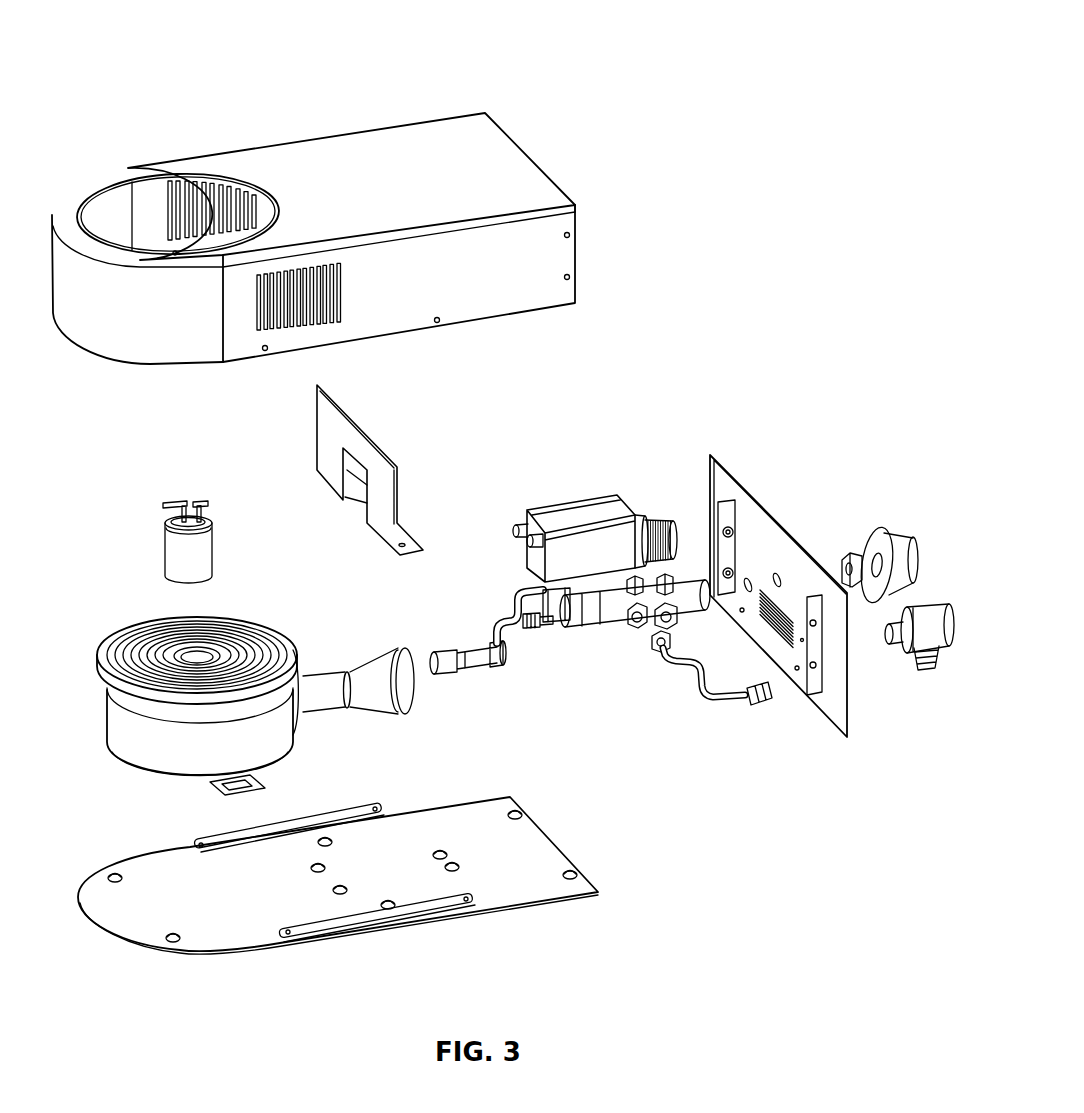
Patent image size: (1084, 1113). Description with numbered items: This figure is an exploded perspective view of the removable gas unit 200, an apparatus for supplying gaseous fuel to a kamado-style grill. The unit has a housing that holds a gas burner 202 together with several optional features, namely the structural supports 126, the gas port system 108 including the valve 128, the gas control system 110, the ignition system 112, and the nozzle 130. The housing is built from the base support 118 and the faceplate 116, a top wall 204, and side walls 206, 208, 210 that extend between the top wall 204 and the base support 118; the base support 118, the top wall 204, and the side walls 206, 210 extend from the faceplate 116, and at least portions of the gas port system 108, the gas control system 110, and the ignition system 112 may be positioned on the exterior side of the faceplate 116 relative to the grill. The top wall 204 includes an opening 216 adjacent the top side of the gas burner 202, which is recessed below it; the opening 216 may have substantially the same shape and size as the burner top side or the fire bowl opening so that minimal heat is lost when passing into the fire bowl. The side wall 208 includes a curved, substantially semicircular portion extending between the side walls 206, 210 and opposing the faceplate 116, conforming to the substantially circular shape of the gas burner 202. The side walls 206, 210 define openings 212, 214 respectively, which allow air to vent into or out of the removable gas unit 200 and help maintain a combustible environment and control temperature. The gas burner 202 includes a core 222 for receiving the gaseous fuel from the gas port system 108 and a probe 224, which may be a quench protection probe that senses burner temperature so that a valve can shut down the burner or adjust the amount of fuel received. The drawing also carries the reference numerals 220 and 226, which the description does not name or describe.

The removable gas unit 200 is at (665, 40).
The gas burner 202 is at (140, 603).
The top wall 204 is at (522, 172).
The side wall 206 is at (513, 300).
The side wall 208 is at (112, 342).
The side wall 210 is at (150, 187).
The openings 212 is at (287, 330).
The openings 214 is at (213, 185).
The opening 216 is at (90, 207).
The probe 224 is at (207, 503).
The capacitor 226 is at (168, 517).
The pump head 220 is at (273, 647).
The core 222 is at (122, 727).
The structural supports 126 is at (353, 435).
The nozzle 130 is at (470, 667).
The valve 128 is at (615, 610).
The ignition system 112 is at (650, 517).
The faceplate 116 is at (757, 520).
The gas control system 110 is at (898, 548).
The gas port system 108 is at (928, 612).
The base support 118 is at (470, 815).